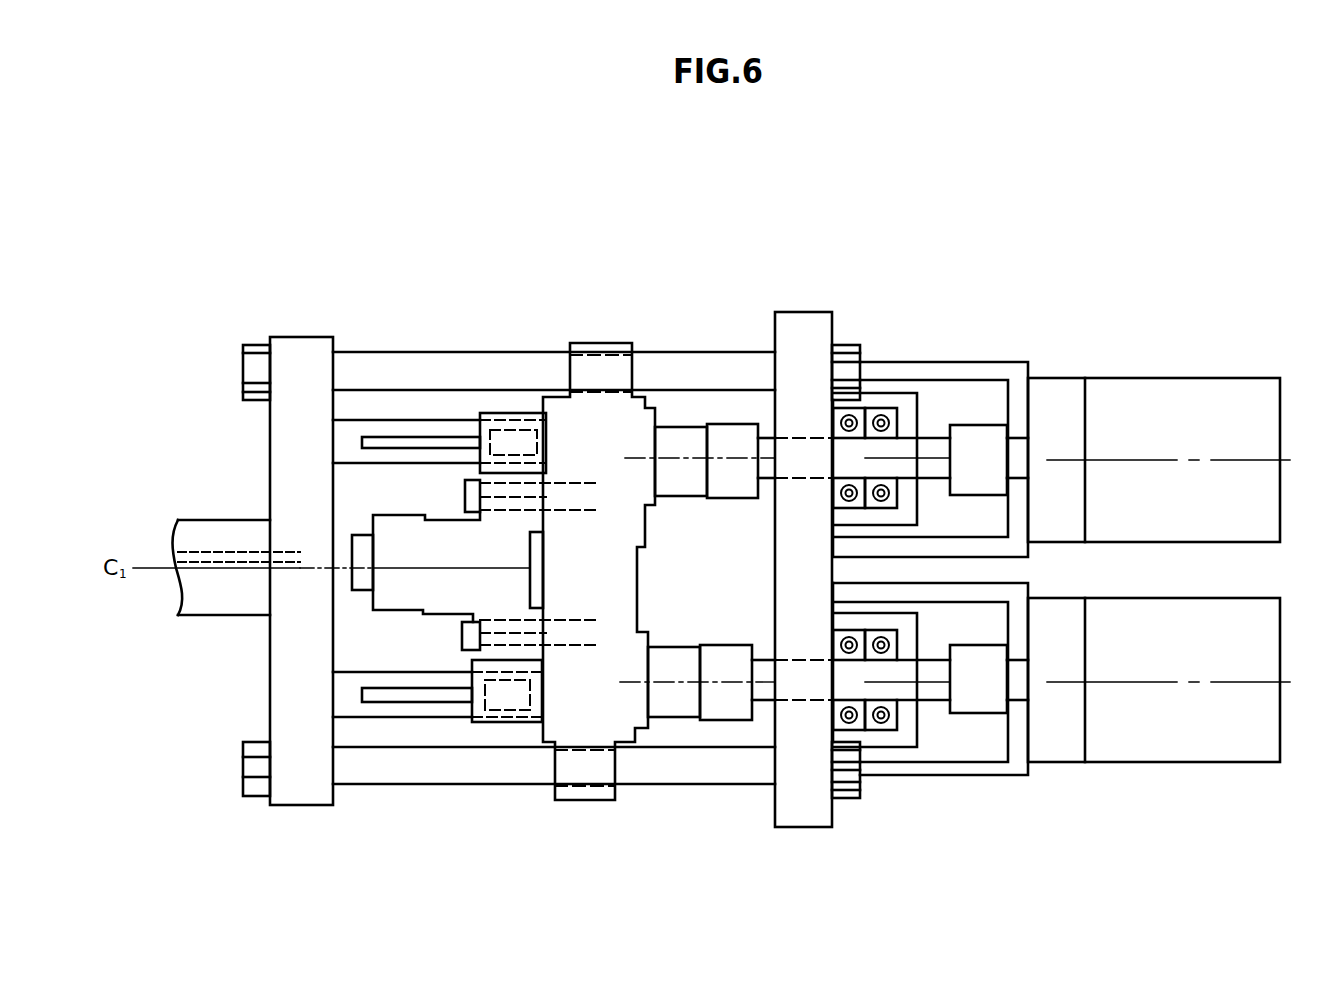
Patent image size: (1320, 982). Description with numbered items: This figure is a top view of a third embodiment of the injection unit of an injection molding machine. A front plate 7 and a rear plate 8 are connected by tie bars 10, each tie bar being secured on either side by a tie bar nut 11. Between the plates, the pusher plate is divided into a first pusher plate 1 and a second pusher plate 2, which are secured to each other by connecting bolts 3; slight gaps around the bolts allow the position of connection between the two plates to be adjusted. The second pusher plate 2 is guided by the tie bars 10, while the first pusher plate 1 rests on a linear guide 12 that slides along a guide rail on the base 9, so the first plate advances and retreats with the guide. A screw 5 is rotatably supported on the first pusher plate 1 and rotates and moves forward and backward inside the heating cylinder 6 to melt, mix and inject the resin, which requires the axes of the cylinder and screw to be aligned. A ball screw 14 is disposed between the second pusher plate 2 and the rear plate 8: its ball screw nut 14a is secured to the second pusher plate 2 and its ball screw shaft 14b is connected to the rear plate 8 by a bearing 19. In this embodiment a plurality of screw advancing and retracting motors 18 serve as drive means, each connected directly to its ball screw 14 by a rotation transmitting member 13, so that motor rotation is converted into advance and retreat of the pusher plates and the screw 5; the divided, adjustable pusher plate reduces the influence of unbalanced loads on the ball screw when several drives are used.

The first pusher plate 1 is at (412, 612).
The second pusher plate 2 is at (641, 583).
The connecting bolts 3 is at (465, 507).
The screw 5 is at (215, 550).
The heating cylinder 6 is at (232, 615).
The front plate 7 is at (303, 338).
The rear plate 8 is at (805, 312).
The base 9 is at (348, 717).
The tie bars 10 is at (483, 350).
The tie bar nut 11 is at (245, 347).
The linear guide 12 is at (502, 722).
The rotation transmitting member 13 is at (977, 425).
The ball screw 14 is at (725, 425).
The ball screw nut 14a is at (700, 720).
The ball screw shaft 14b is at (925, 700).
The screw advancing and retracting motor 18 is at (1167, 377).
The bearing 19 is at (887, 415).